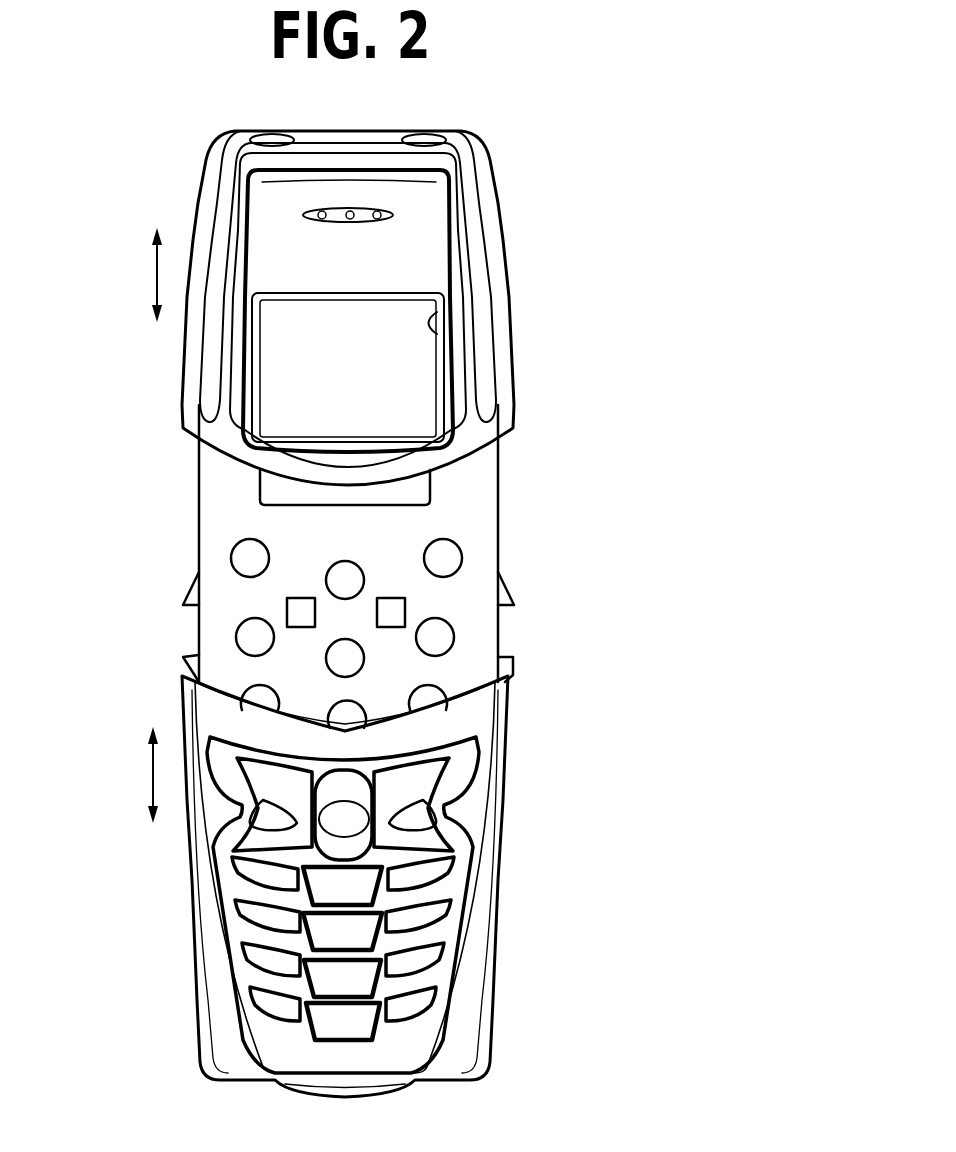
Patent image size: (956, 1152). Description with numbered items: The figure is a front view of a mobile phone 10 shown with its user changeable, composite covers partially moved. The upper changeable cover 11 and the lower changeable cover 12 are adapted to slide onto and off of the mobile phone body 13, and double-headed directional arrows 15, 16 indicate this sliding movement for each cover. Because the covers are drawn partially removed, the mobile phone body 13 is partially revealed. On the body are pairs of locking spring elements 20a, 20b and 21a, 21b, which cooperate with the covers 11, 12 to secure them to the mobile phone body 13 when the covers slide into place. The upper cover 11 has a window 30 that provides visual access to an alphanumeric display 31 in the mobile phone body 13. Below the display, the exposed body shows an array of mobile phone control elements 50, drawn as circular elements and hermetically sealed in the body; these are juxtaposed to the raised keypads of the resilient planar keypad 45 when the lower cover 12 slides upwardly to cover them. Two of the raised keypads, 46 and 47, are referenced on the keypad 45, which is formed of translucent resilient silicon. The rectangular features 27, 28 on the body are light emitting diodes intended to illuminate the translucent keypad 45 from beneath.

The mobile phone 10 is at (540, 183).
The changeable cover 11 is at (470, 372).
The changeable cover 12 is at (463, 812).
The mobile phone body 13 is at (487, 497).
The double-headed directional arrow 15 is at (157, 270).
The double-headed directional arrow 16 is at (153, 770).
The locking spring element 20a is at (183, 580).
The locking spring element 20b is at (505, 590).
The locking spring element 21a is at (183, 663).
The locking spring element 21b is at (505, 660).
The light emitting diode 27 is at (390, 606).
The light emitting diode 28 is at (303, 617).
The window 30 is at (436, 325).
The alphanumeric display 31 is at (420, 490).
The resilient planar keypad 45 is at (397, 1055).
The raised keypad 46 is at (403, 1008).
The raised keypad 47 is at (340, 1020).
The array of mobile phone control elements 50 is at (298, 553).